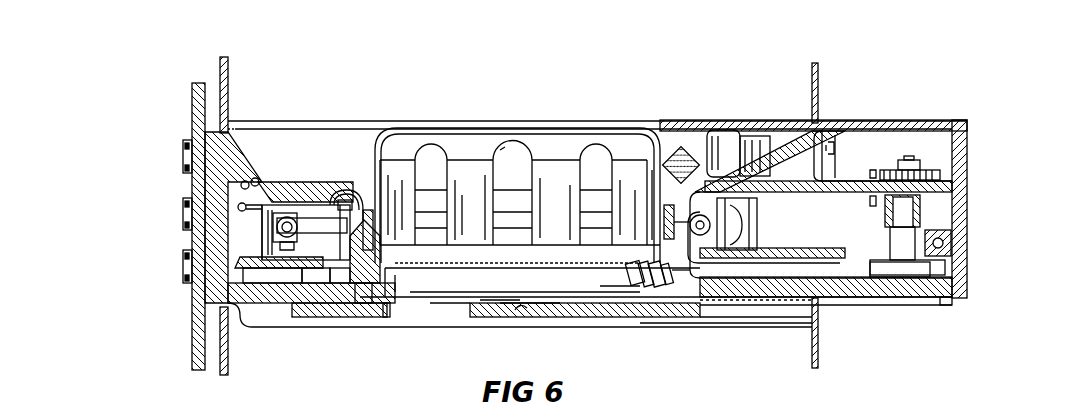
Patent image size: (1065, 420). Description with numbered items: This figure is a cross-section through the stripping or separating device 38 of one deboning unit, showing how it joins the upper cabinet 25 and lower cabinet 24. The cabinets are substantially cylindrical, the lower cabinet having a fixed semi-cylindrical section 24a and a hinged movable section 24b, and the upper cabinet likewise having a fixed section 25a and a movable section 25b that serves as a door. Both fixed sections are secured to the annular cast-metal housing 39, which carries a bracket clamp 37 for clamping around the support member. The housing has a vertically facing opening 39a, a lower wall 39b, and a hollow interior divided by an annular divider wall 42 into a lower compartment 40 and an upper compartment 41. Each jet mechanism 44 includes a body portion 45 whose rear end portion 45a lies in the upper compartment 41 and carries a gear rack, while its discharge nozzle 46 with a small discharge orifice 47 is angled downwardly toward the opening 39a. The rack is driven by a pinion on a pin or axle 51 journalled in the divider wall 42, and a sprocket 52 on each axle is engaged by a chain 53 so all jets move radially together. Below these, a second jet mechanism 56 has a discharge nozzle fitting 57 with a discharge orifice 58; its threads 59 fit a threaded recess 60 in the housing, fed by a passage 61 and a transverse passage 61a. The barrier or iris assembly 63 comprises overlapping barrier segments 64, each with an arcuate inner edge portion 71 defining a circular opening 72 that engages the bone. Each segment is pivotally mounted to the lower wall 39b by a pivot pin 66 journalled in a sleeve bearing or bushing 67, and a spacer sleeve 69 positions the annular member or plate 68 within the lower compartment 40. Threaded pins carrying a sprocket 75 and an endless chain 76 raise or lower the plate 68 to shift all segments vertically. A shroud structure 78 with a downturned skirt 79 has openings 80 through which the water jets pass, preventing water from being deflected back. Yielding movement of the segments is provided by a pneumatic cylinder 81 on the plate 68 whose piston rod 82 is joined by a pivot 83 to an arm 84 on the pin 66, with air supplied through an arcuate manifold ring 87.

The lower cabinet 24 is at (818, 370).
The fixed semi-cylindrical section 24a is at (228, 368).
The movable semi-cylindrical section 24b is at (818, 345).
The upper cabinet 25 is at (233, 74).
The fixed semi-cylindrical section 25a is at (220, 65).
The movable section 25b is at (812, 70).
The bracket clamp 37 is at (192, 106).
The stripping or separating device 38 is at (84, 140).
The housing 39 is at (968, 128).
The opening 39a is at (404, 278).
The lower wall 39b is at (386, 310).
The lower compartment 40 is at (853, 270).
The upper compartment 41 is at (832, 135).
The annular divider wall 42 is at (838, 165).
The jet mechanism 44 is at (690, 118).
The body portion 45 is at (765, 140).
The rear end portion 45a is at (831, 140).
The discharge nozzle 46 is at (673, 150).
The discharge orifice 47 is at (665, 178).
The pin or axle 51 is at (904, 160).
The sprocket 52 is at (248, 198).
The chain 53 is at (245, 181).
The second jet mechanism 56 is at (612, 292).
The discharge nozzle fitting 57 is at (640, 280).
The discharge orifice 58 is at (625, 270).
The exterior threads 59 is at (656, 285).
The threaded recess 60 is at (668, 285).
The passage 61 is at (763, 290).
The transverse passage 61a is at (955, 300).
The barrier or iris assembly 63 is at (342, 327).
The barrier segment 64 is at (440, 320).
The pivot pin 66 is at (338, 194).
The sleeve bearing or bushing 67 is at (362, 285).
The annular member or plate 68 is at (252, 262).
The spacer sleeve 69 is at (325, 222).
The inner edge portion 71 is at (526, 303).
The circular opening 72 is at (494, 318).
The sprocket 75 is at (935, 200).
The endless chain 76 is at (240, 212).
The shroud structure 78 is at (362, 128).
The skirt or flange 79 is at (466, 165).
The opening 80 is at (515, 148).
The pneumatic cylinder 81 is at (745, 210).
The piston rod 82 is at (766, 245).
The pivot 83 is at (282, 244).
The arm 84 is at (300, 215).
The arcuate manifold ring 87 is at (952, 242).